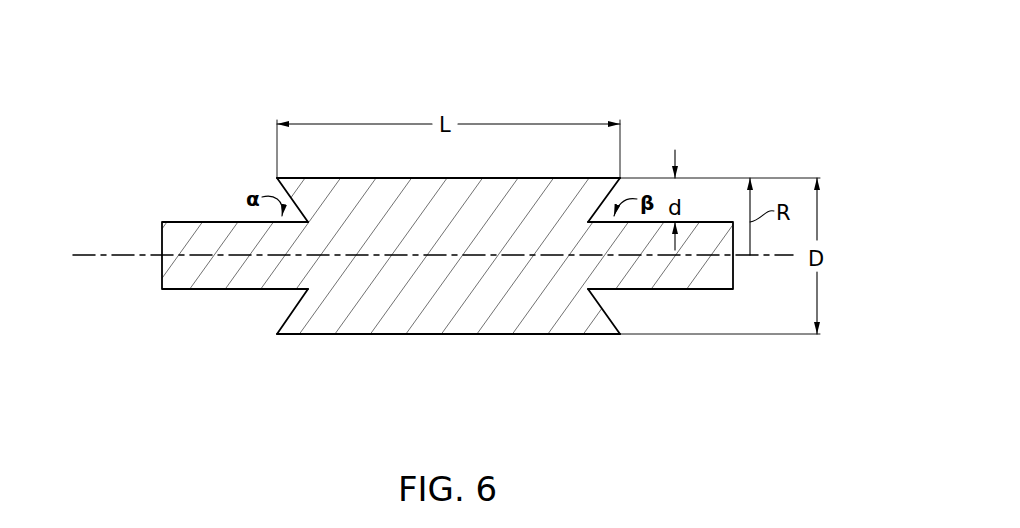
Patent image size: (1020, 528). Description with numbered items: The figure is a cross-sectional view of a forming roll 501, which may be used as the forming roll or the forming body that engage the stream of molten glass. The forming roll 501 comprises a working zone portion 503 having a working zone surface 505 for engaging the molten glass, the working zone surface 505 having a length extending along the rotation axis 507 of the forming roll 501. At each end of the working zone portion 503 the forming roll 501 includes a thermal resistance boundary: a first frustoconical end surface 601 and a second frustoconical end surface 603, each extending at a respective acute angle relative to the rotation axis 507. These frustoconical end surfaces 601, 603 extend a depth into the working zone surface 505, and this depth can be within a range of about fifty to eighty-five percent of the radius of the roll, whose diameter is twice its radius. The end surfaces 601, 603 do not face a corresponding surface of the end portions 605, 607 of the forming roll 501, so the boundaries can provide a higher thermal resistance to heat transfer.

The forming roll 501 is at (427, 229).
The working zone portion 503 is at (448, 311).
The working zone surface 505 is at (448, 379).
The rotation axis 507 is at (92, 253).
The first frustoconical end surface 601 is at (246, 259).
The second frustoconical end surface 603 is at (655, 251).
The end portion 605 is at (176, 290).
The end portion 607 is at (717, 290).